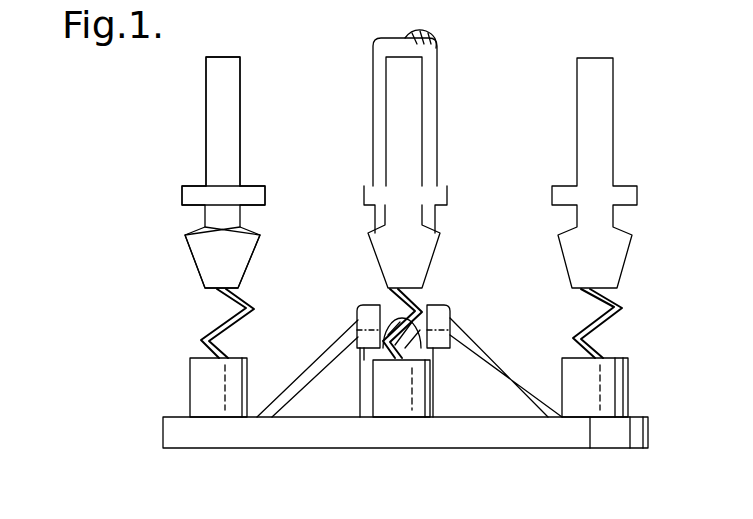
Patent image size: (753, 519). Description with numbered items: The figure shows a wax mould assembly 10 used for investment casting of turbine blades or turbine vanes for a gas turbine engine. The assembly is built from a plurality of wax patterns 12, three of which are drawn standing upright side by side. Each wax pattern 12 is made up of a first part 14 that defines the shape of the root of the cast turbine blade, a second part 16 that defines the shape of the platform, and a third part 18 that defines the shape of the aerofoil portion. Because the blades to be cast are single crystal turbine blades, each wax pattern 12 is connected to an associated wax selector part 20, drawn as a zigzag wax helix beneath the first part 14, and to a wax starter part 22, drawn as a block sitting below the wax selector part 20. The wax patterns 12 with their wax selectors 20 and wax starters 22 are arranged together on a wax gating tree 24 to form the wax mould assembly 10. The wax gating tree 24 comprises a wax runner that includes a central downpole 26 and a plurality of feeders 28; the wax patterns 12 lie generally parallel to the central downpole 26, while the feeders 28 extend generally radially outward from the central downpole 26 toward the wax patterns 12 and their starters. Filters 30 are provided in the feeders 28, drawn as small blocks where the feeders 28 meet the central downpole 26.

The wax mould assembly 10 is at (617, 95).
The wax pattern 12 is at (198, 138).
The first part 14 is at (198, 252).
The second part 16 is at (182, 195).
The third part 18 is at (206, 76).
The wax selector part 20 is at (200, 330).
The wax starter part 22 is at (205, 385).
The wax gating tree 24 is at (437, 103).
The central downpole 26 is at (437, 165).
The feeder 28 is at (335, 360).
The filter 30 is at (440, 345).